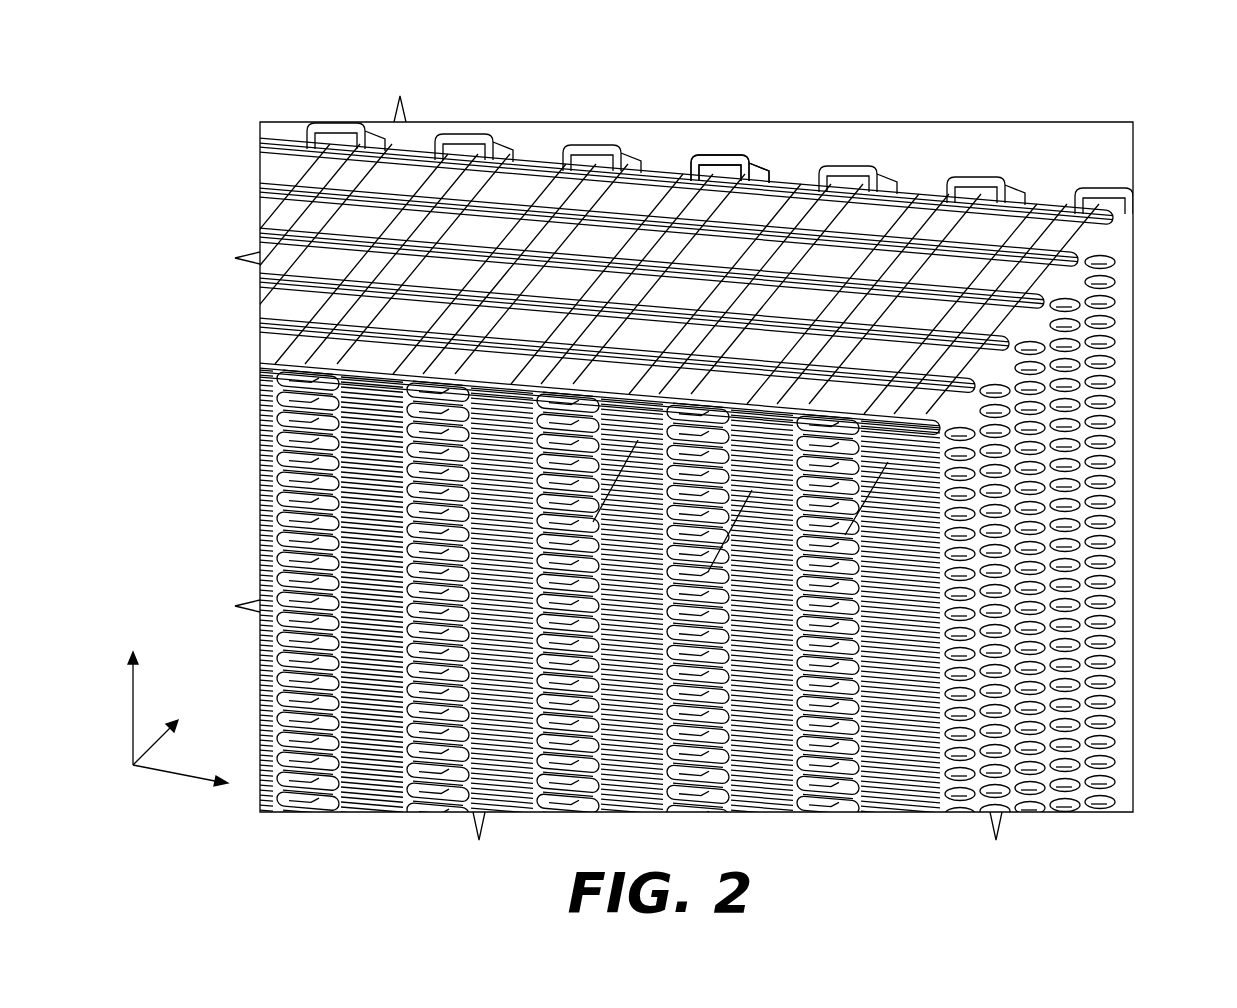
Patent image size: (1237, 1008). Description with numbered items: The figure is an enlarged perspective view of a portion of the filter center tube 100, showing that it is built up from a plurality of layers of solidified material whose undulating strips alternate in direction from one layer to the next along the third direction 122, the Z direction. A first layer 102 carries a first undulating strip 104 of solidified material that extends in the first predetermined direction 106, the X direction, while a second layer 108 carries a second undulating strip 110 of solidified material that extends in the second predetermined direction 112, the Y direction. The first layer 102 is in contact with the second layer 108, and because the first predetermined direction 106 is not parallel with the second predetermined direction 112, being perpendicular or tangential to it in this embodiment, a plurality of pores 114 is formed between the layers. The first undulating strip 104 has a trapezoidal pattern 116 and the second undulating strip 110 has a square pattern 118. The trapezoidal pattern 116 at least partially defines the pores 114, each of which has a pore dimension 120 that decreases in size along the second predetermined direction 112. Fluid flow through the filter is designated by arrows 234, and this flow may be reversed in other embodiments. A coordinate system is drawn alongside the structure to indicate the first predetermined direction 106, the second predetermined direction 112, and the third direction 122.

The filter center tube 100 is at (688, 78).
The first layer 102 is at (1012, 188).
The first undulating strip 104 is at (885, 180).
The first predetermined direction 106 is at (170, 775).
The second layer 108 is at (1117, 213).
The second undulating strip 110 is at (1115, 263).
The second predetermined direction 112 is at (157, 745).
The pores 114 is at (627, 397).
The trapezoidal pattern 116 is at (625, 153).
The square pattern 118 is at (1117, 332).
The pore dimension 120 is at (860, 305).
The third direction 122 is at (136, 680).
The arrows 234 is at (883, 470).